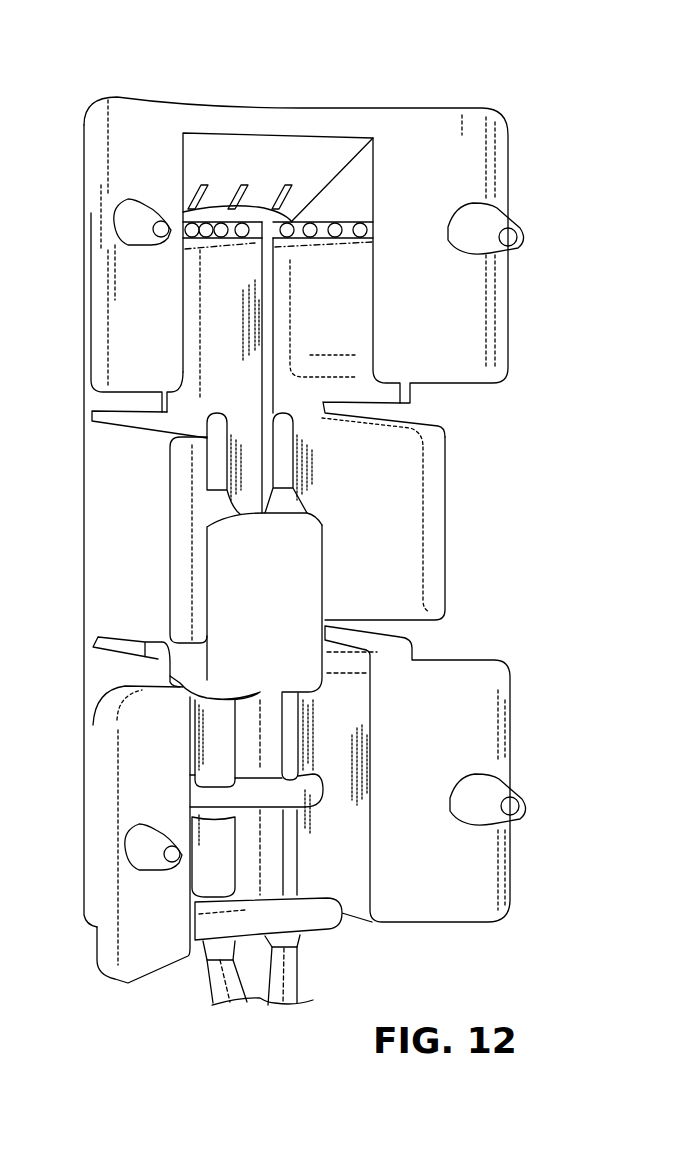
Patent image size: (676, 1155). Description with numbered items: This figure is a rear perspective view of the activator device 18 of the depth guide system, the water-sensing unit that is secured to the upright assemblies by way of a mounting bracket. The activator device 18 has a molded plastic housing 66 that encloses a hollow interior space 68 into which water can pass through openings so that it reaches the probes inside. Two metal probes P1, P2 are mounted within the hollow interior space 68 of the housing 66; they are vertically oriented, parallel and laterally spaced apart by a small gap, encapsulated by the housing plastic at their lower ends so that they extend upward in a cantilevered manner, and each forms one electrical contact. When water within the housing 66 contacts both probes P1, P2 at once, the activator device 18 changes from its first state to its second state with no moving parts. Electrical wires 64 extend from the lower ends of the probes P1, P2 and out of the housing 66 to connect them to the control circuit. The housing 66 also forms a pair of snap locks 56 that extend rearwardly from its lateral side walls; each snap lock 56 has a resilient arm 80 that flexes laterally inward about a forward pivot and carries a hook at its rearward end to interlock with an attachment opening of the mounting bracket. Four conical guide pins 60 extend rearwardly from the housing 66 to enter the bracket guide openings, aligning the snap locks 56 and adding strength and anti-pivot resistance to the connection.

The activator device 18 is at (560, 112).
The snap lock 56 is at (110, 547).
The guide pin 60 is at (143, 222).
The electrical wires 64 is at (207, 983).
The housing 66 is at (85, 673).
The hollow interior space 68 is at (217, 343).
The arm 80 is at (115, 598).
The probe P1 is at (290, 451).
The probe P2 is at (207, 459).